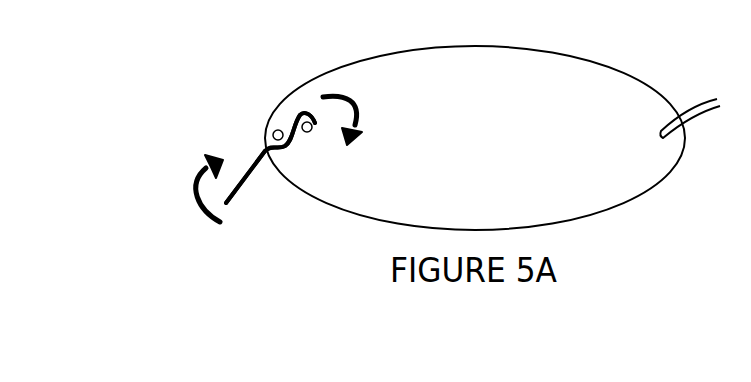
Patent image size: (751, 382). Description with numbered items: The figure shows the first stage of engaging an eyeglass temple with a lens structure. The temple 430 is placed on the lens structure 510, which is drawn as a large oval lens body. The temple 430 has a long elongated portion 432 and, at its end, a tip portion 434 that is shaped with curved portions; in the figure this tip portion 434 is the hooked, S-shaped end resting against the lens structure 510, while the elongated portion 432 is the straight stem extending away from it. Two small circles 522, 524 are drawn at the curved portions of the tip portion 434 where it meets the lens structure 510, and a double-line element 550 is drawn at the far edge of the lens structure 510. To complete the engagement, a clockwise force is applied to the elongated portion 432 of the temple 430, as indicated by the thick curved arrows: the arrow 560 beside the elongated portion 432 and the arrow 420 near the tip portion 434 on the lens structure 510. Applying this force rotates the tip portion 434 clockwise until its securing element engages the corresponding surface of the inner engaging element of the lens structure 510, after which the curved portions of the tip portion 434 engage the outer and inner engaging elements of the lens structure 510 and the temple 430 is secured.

The lens structure 510 is at (538, 65).
The surface region 420 is at (382, 80).
The temple 430 is at (243, 153).
The elongated portion 432 is at (241, 187).
The tip portion 434 is at (310, 113).
The first pivot 522 is at (275, 131).
The second pivot 524 is at (307, 132).
The tab 550 is at (703, 115).
The rotation direction arrow 560 is at (202, 206).